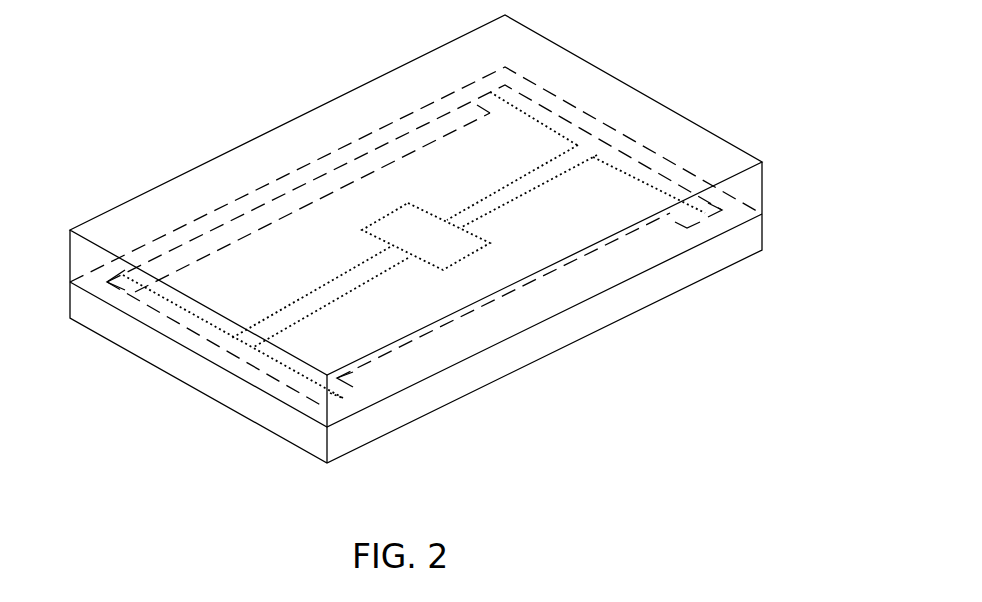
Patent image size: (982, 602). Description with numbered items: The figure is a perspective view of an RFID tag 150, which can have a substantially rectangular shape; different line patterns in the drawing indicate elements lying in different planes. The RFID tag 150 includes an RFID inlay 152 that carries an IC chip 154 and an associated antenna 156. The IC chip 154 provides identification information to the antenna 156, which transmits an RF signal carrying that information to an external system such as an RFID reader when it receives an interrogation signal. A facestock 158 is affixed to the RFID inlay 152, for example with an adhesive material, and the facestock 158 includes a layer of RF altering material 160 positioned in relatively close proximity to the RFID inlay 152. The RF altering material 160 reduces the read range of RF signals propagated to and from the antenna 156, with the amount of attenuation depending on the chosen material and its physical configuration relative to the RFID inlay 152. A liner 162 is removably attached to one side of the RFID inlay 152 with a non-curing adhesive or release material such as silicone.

The RFID tag 150 is at (313, 75).
The RFID inlay 152 is at (439, 206).
The IC chip 154 is at (477, 237).
The antenna 156 is at (528, 192).
The facestock 158 is at (762, 187).
The RF altering material 160 is at (312, 204).
The liner 162 is at (513, 357).